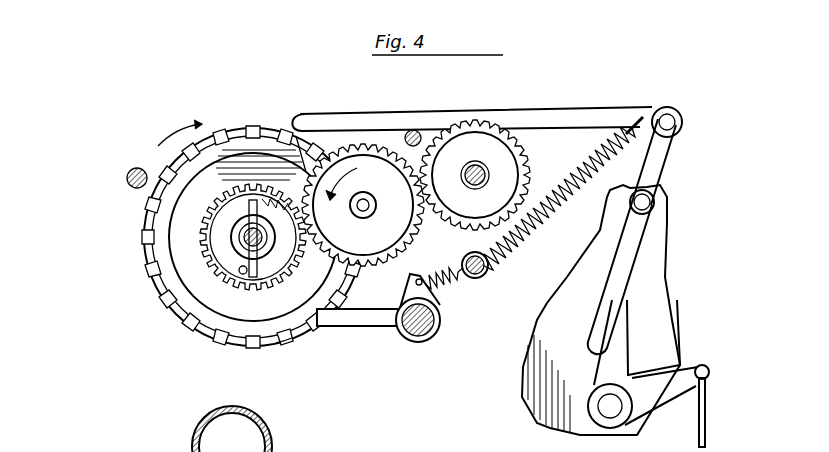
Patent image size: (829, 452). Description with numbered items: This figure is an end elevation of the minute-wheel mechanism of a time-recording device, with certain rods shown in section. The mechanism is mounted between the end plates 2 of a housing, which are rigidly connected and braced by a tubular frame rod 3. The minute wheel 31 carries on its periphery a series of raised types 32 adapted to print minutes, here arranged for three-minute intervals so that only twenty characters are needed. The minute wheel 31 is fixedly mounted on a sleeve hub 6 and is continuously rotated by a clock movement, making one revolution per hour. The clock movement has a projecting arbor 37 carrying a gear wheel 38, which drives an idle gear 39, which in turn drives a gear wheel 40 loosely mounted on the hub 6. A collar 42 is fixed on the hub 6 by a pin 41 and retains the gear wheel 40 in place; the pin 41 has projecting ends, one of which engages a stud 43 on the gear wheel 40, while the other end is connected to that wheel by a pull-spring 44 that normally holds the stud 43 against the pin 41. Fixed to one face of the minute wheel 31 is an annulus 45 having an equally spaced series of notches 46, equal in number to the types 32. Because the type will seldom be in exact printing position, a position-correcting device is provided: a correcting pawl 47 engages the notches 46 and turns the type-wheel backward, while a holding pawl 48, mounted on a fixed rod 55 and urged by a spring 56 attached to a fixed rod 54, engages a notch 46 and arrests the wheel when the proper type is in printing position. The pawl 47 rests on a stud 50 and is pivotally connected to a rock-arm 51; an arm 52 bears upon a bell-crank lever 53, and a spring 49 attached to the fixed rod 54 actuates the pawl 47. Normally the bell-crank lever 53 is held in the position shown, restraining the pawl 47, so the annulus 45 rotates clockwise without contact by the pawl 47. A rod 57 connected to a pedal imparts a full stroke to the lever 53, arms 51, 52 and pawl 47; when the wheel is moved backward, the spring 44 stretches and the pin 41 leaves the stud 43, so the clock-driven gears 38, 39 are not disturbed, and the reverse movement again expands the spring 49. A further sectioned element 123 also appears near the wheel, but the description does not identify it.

The end plates 2 is at (537, 403).
The tubular rod 3 is at (193, 437).
The sleeve hub 6 is at (218, 268).
The minute wheel 31 is at (173, 157).
The raised types 32 is at (283, 346).
The arbor 37 is at (488, 172).
The gear wheel 38 is at (490, 120).
The idle gear 39 is at (363, 205).
The gear wheel 40 is at (208, 248).
The pin 41 is at (250, 279).
The collar 42 is at (238, 247).
The stud 43 is at (240, 276).
The pull-spring 44 is at (267, 190).
The annulus 45 is at (157, 225).
The notches 46 is at (288, 330).
The pawl 47 is at (326, 114).
The holding pawl 48 is at (355, 325).
The spring 49 is at (548, 232).
The stud 50 is at (411, 129).
The rock-arm 51 is at (660, 172).
The arm 52 is at (630, 262).
The bell-crank lever 53 is at (630, 330).
The fixed rod 54 is at (479, 277).
The fixed rod 55 is at (413, 343).
The spring 56 is at (451, 286).
The rod 57 is at (706, 430).
The pin 123 is at (126, 176).